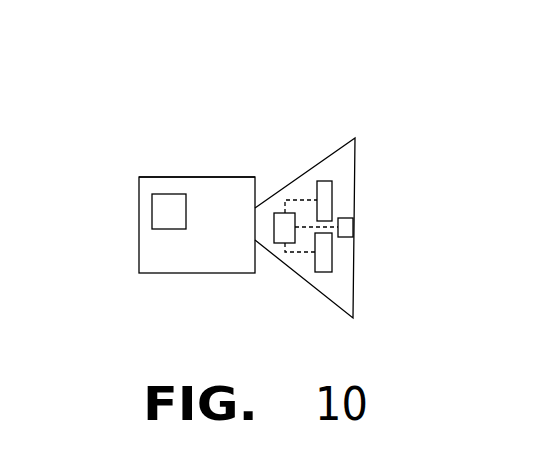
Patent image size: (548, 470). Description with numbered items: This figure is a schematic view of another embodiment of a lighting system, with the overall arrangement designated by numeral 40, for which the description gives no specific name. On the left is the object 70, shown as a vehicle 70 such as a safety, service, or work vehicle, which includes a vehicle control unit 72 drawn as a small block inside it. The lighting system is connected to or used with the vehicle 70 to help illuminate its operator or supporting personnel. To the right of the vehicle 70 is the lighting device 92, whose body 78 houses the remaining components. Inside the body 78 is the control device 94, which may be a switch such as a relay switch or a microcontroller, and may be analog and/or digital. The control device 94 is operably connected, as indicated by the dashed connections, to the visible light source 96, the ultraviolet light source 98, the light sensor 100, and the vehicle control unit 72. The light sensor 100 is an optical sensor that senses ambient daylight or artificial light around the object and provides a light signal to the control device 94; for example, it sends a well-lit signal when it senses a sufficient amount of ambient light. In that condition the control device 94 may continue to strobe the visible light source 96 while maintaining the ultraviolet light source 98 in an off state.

The sensor assembly 40 is at (283, 94).
The object 70 is at (190, 274).
The vehicle control unit 72 is at (152, 206).
The body 78 is at (200, 177).
The lighting device 92 is at (293, 176).
The control device 94 is at (277, 243).
The visible light source 96 is at (318, 181).
The ultraviolet light source 98 is at (322, 272).
The light sensor 100 is at (353, 231).